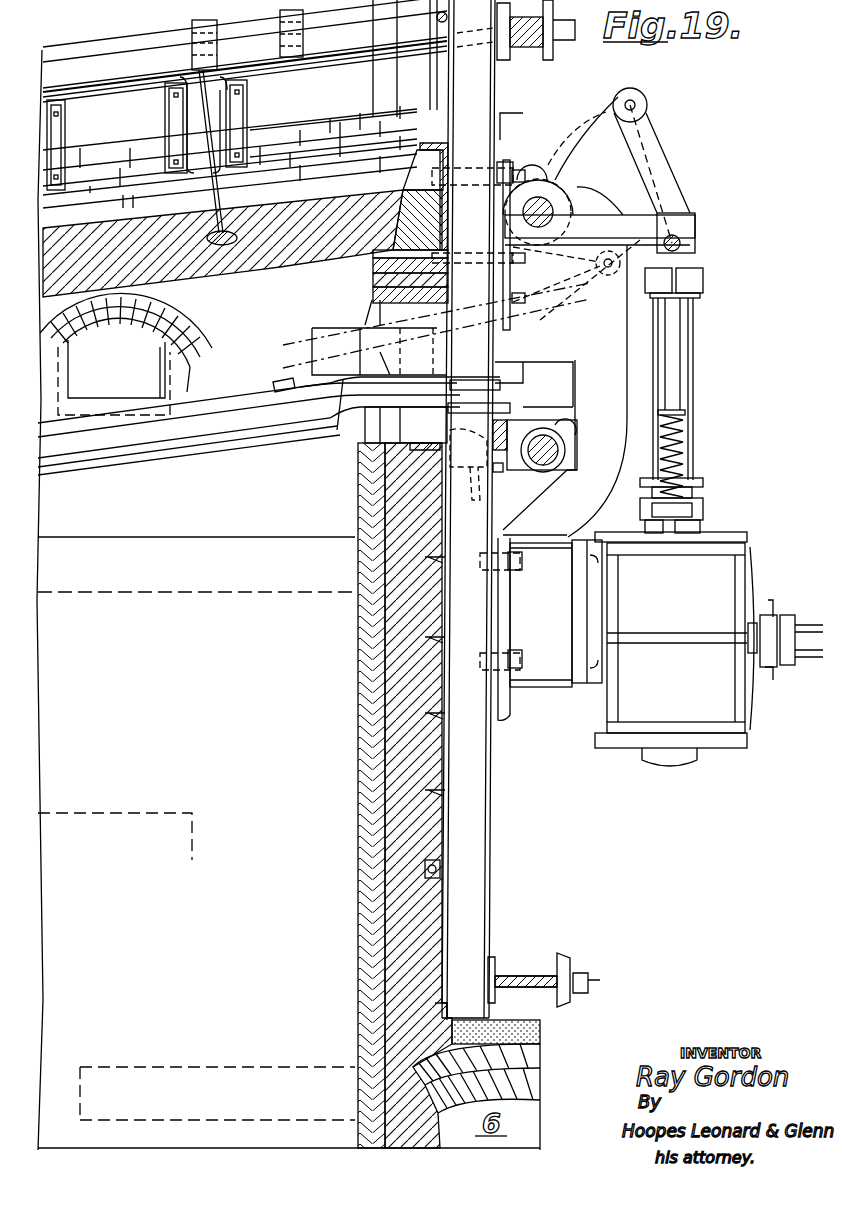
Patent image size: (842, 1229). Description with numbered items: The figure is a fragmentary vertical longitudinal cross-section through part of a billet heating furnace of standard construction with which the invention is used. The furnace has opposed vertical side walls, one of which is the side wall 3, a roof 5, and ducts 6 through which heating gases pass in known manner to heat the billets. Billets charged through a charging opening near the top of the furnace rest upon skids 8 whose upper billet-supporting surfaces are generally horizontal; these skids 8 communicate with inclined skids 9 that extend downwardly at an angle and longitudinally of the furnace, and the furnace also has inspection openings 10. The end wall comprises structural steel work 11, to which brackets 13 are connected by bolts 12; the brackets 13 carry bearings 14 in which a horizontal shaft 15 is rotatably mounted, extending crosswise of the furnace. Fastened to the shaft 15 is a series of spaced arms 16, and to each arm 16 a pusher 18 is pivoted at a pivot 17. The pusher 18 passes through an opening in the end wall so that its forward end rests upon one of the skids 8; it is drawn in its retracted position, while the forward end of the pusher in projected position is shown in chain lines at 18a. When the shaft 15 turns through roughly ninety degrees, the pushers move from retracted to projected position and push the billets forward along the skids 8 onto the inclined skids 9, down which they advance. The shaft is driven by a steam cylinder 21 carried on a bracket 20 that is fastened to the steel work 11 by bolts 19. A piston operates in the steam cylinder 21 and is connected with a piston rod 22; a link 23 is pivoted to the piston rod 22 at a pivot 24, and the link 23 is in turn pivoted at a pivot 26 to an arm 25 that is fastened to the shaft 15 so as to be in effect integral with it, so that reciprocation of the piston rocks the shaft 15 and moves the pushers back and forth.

The vertical side wall 3 is at (257, 315).
The roof 5 is at (123, 228).
The ducts 6 is at (250, 733).
The skids 8 is at (341, 380).
The inclined skids 9 is at (208, 371).
The inspection openings 10 is at (135, 372).
The structural steel work 11 is at (478, 81).
The bolts 12 is at (470, 254).
The brackets 13 is at (507, 162).
The bearings 14 is at (508, 208).
The horizontal shaft 15 is at (551, 175).
The arms 16 is at (620, 190).
The pivot 17 is at (610, 272).
The pusher 18 is at (557, 323).
The forward end of pusher in projected position 18a is at (288, 352).
The bolts 19 is at (482, 652).
The bracket 20 is at (560, 605).
The steam cylinder 21 is at (687, 608).
The piston rod 22 is at (694, 263).
The link 23 is at (657, 177).
The pivot 24 is at (682, 238).
The arm 25 is at (622, 161).
The pivot 26 is at (636, 105).